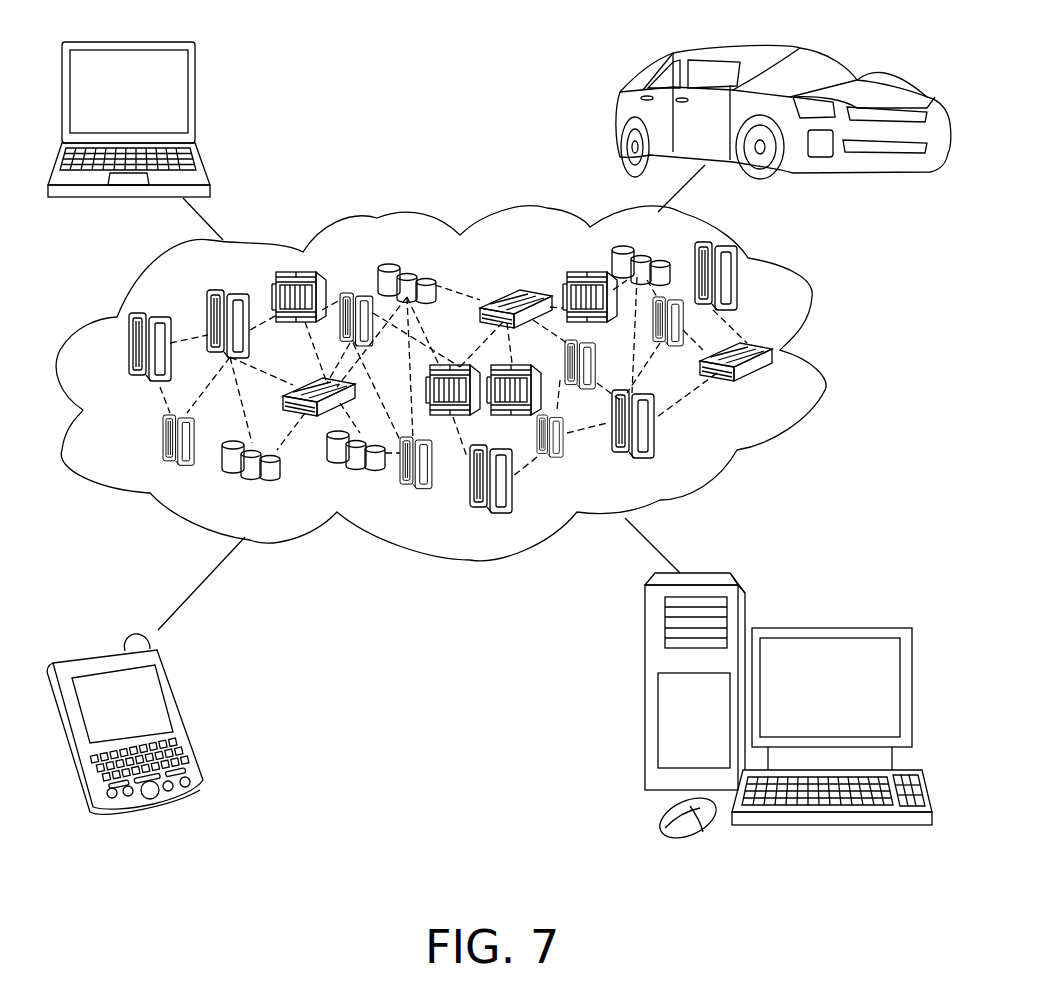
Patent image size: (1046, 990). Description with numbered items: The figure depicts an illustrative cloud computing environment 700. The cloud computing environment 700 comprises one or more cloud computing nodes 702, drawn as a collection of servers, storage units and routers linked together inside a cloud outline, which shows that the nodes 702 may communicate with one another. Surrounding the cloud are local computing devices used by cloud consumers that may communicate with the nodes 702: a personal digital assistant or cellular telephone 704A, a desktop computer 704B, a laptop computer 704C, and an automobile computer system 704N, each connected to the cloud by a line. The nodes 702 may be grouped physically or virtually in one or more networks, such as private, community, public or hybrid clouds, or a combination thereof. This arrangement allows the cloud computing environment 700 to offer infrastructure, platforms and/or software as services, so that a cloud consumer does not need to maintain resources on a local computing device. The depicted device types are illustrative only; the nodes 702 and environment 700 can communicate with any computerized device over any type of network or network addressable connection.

The cloud computing environment 700 is at (790, 340).
The cloud computing nodes 702 is at (776, 385).
The personal digital assistant or cellular telephone 704A is at (173, 683).
The desktop computer 704B is at (817, 625).
The laptop computer 704C is at (192, 77).
The automobile computer system 704N is at (618, 115).